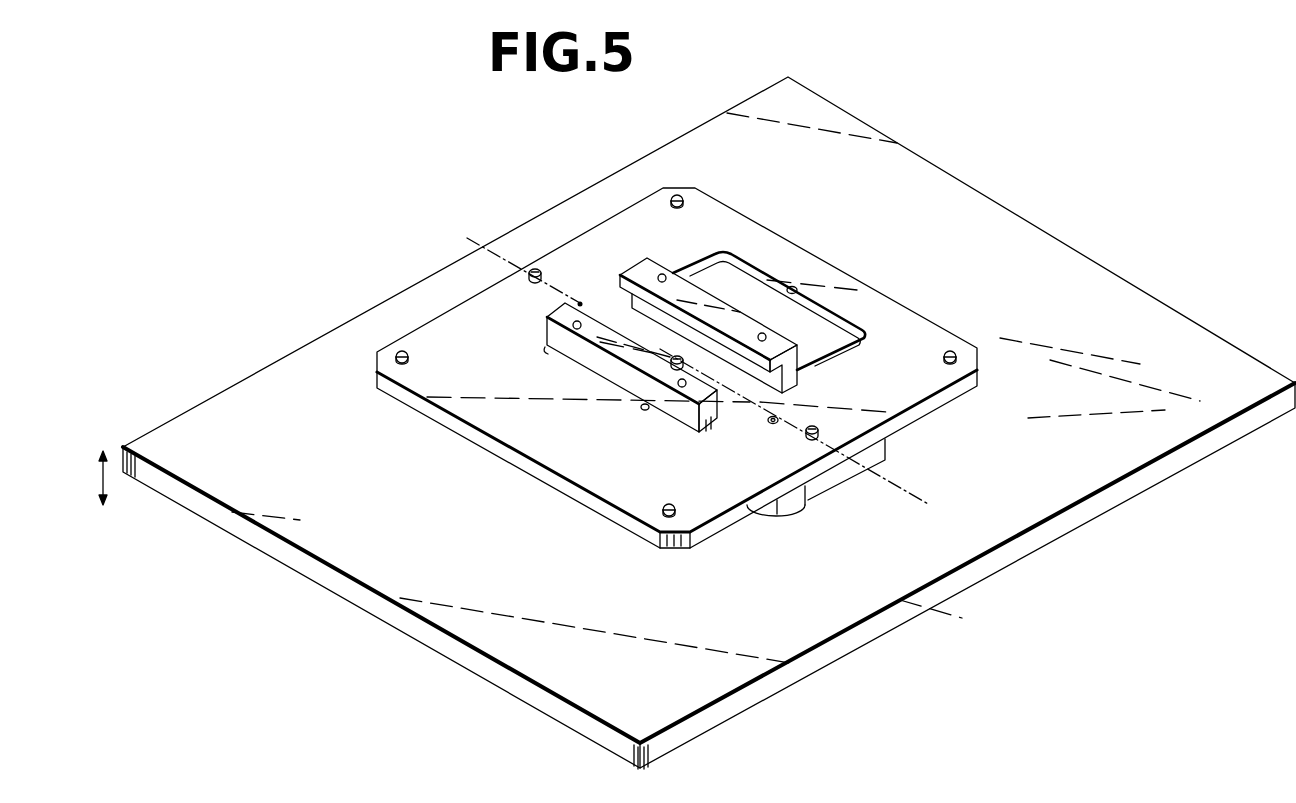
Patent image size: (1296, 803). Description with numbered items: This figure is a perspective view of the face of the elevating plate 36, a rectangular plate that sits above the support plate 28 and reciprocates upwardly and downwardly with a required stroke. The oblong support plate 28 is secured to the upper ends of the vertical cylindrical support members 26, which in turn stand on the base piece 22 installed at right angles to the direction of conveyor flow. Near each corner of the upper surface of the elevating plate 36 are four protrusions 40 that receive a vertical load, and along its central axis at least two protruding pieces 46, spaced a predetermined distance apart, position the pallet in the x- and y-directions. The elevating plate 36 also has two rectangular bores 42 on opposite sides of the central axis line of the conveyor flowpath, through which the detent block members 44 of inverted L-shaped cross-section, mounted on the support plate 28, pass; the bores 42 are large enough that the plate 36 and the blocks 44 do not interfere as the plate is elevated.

The base piece 22 is at (1140, 304).
The cylindrical support member 26 is at (777, 514).
The support plate 28 is at (838, 468).
The elevating plate 36 is at (453, 320).
The protrusion 40 is at (678, 196).
The rectangular bore 42 is at (794, 286).
The detent block member 44 is at (708, 297).
The protruding piece 46 is at (540, 268).